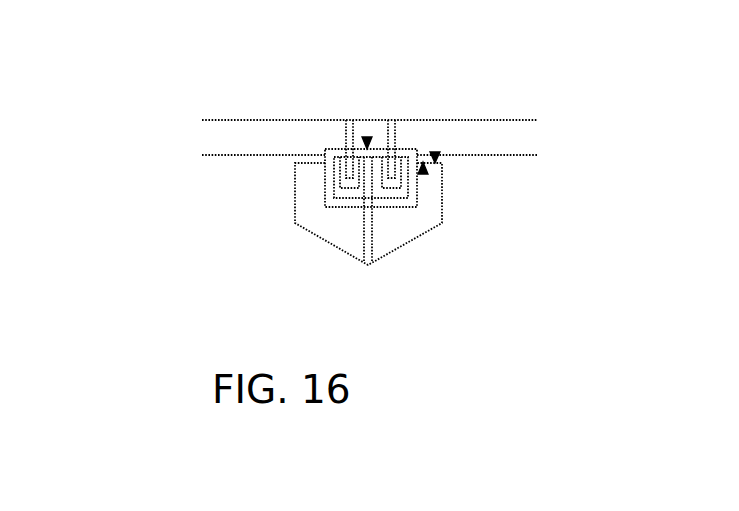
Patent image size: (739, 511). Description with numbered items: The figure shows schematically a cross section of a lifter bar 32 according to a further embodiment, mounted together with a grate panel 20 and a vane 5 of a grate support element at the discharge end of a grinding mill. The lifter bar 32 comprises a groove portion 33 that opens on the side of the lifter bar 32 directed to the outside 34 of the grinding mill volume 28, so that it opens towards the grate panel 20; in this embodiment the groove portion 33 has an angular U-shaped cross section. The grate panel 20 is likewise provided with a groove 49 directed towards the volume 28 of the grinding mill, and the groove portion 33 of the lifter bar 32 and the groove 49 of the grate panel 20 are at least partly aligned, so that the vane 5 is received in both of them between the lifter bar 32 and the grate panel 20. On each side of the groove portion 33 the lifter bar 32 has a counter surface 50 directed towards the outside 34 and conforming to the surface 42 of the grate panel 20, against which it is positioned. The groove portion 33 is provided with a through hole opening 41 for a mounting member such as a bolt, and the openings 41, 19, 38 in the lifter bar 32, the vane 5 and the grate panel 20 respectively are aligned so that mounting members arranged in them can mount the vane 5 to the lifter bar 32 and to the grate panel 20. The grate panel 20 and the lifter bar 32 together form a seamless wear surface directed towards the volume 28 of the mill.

The grate panel 20 is at (277, 133).
The outside of the grinding mill 34 is at (348, 38).
The grinding mill volume 28 is at (262, 318).
The openings 38 is at (350, 125).
The groove portion 33 is at (337, 212).
The opening 19 is at (351, 165).
The vane 5 is at (398, 192).
The through hole opening 41 is at (370, 262).
The lifter bar 32 is at (413, 233).
The groove 49 is at (367, 137).
The counter surface 50 is at (435, 152).
The surface 42 is at (423, 174).